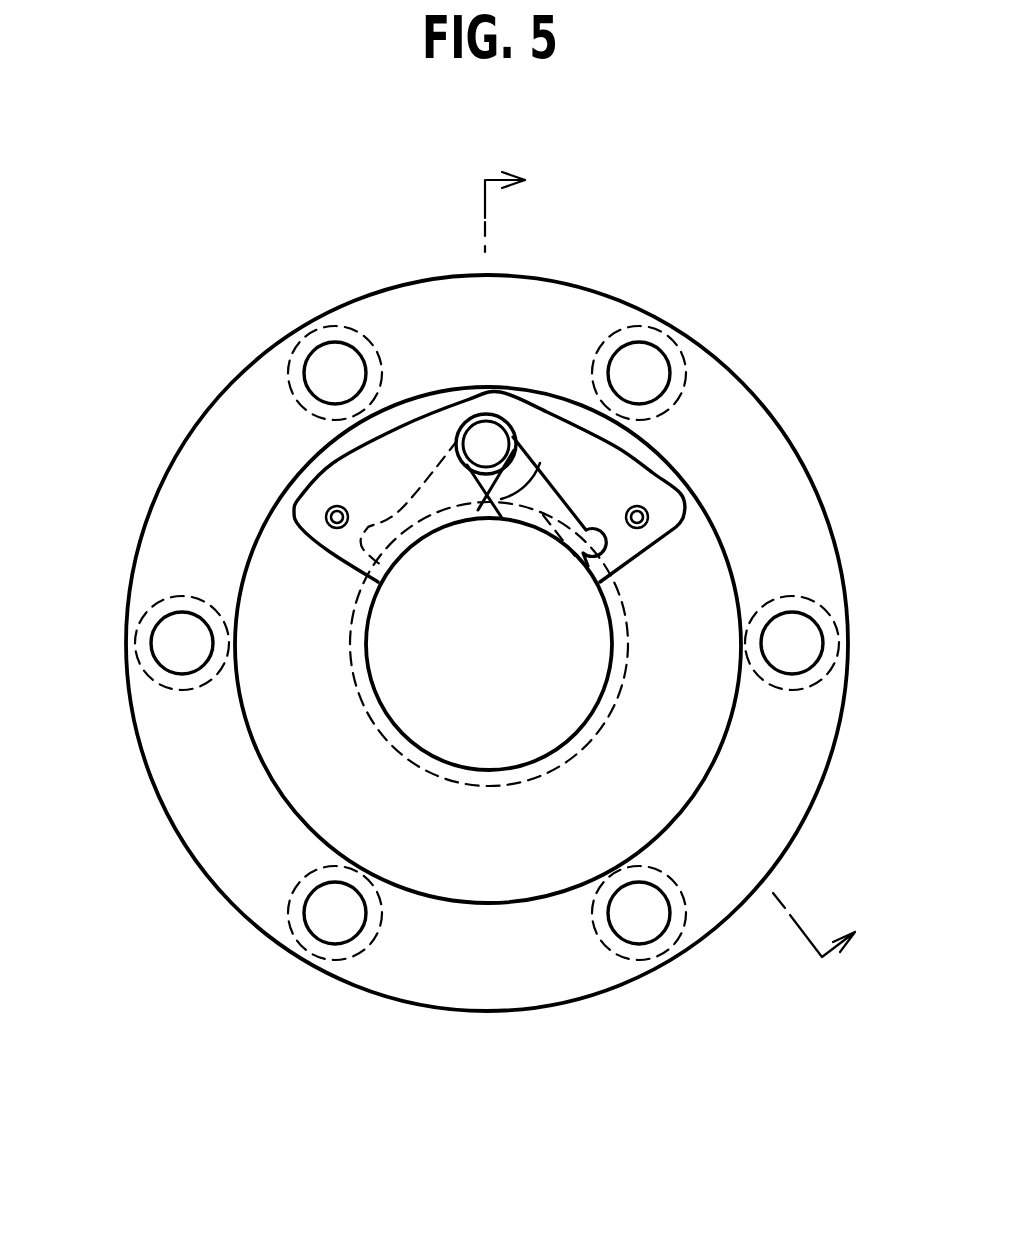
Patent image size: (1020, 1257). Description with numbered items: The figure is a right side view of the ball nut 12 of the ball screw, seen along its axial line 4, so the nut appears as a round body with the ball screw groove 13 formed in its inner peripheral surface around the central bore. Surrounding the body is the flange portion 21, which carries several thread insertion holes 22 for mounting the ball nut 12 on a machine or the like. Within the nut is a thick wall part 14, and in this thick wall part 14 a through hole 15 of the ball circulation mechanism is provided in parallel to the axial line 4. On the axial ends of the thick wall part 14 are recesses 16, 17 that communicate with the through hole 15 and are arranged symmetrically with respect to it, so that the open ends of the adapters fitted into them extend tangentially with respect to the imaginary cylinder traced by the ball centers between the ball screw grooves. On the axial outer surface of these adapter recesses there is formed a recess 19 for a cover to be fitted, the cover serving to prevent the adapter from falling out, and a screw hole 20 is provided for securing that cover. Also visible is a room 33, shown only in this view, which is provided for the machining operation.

The axial line 4 is at (673, 559).
The ball nut 12 is at (682, 212).
The ball screw groove 13 is at (437, 765).
The thick wall part 14 is at (260, 703).
The through hole 15 is at (483, 432).
The recess 16 is at (421, 505).
The recess 17 is at (540, 507).
The recess for a cover 19 is at (355, 475).
The screw hole 20 is at (330, 518).
The flange portion 21 is at (437, 983).
The thread insertion hole 22 is at (323, 923).
The room for the machining operation 33 is at (607, 532).